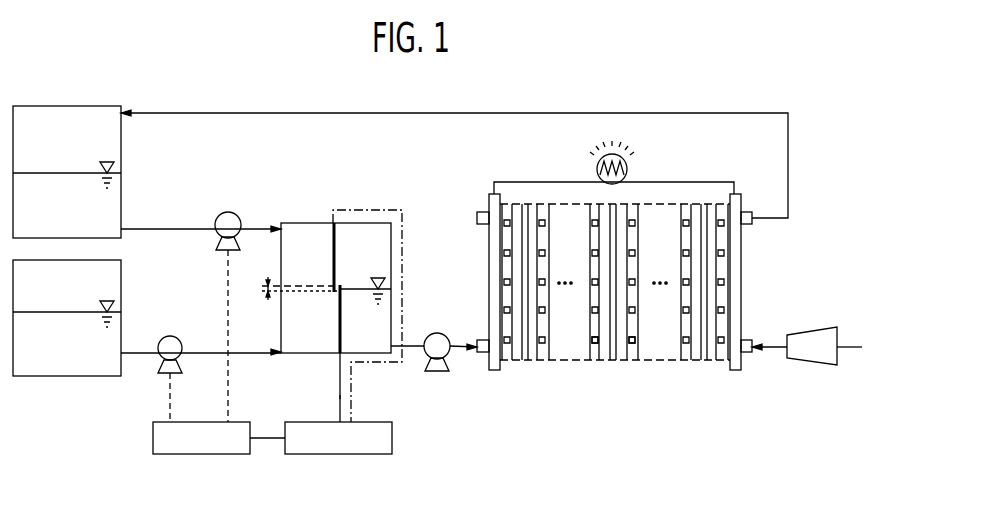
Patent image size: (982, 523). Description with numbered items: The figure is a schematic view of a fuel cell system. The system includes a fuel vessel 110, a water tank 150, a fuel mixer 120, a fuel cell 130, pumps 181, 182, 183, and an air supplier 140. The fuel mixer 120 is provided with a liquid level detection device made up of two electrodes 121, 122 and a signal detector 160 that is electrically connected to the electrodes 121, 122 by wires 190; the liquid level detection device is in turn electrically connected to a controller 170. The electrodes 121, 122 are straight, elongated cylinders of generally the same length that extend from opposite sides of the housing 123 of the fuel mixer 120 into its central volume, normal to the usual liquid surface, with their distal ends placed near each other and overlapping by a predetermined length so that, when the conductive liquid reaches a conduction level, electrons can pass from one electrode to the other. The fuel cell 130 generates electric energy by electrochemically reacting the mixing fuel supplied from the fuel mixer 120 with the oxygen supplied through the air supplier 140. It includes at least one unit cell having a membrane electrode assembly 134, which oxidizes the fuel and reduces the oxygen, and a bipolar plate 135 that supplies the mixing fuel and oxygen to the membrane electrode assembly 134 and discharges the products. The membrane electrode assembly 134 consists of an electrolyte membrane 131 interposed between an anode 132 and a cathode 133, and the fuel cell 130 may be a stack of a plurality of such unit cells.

The fuel vessel 110 is at (68, 376).
The fuel mixer 120 is at (351, 292).
The electrode 121 is at (336, 252).
The electrode 122 is at (340, 318).
The housing 123 is at (402, 250).
The fuel cell 130 is at (614, 296).
The electrolyte membrane 131 is at (613, 362).
The anode 132 is at (599, 362).
The cathode 133 is at (628, 362).
The membrane electrode assembly 134 is at (615, 341).
The bipolar plate 135 is at (657, 434).
The air supplier 140 is at (812, 335).
The water tank 150 is at (67, 106).
The signal detector 160 is at (340, 454).
The controller 170 is at (202, 454).
The pump 181 is at (230, 212).
The pump 182 is at (440, 333).
The pump 183 is at (172, 336).
The wires 190 is at (339, 398).